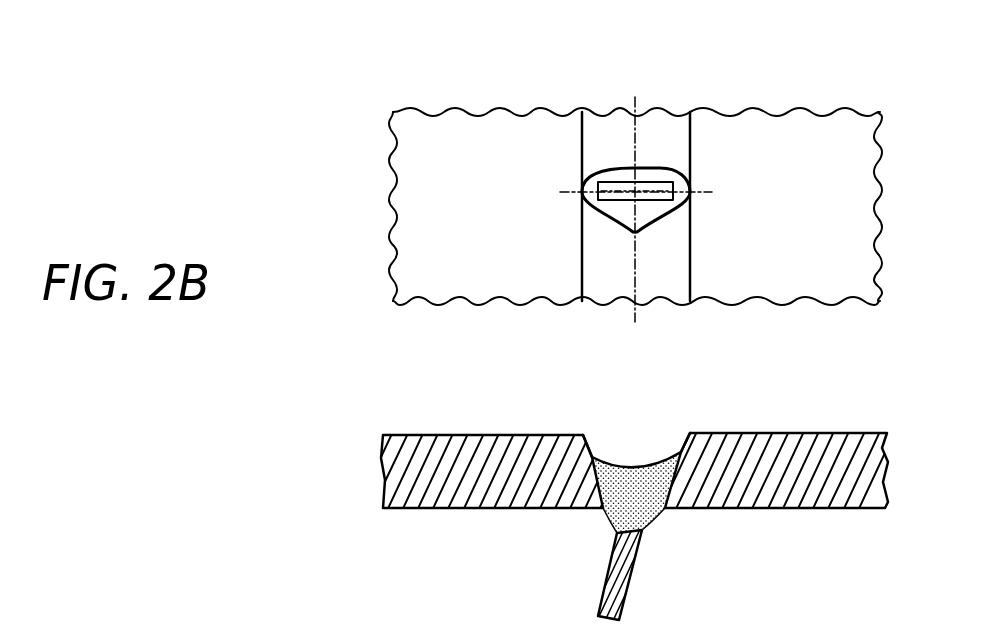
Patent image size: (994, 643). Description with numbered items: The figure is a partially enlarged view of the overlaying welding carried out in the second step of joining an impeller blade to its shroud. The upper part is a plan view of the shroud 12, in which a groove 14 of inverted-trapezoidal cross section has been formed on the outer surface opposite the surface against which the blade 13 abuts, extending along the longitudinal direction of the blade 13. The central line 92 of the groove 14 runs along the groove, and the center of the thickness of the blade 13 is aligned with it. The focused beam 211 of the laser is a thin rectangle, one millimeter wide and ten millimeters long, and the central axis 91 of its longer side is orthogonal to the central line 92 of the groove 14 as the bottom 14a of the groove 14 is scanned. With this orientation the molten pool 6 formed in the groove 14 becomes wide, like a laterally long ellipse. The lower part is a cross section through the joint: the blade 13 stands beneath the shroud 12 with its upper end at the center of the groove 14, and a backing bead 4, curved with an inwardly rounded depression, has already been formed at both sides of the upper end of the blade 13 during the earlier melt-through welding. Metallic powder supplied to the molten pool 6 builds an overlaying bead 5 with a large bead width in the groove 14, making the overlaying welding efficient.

The shroud 12 is at (437, 215).
The groove 14 is at (683, 262).
The bottom of the groove 14a is at (593, 132).
The molten pool 6 is at (590, 176).
The focused beam 211 is at (655, 180).
The central axis of the longer side of the focused beam 91 is at (568, 197).
The central line of the groove 92 is at (635, 313).
The overlaying bead 5 is at (627, 465).
The backing bead 4 is at (610, 515).
The blade 13 is at (627, 587).